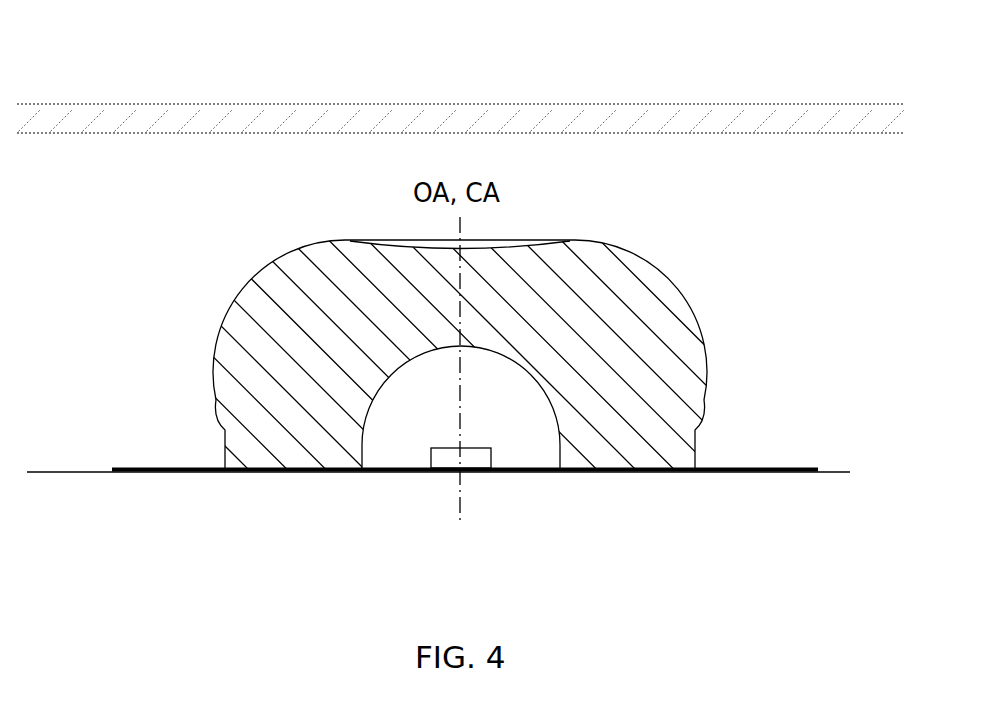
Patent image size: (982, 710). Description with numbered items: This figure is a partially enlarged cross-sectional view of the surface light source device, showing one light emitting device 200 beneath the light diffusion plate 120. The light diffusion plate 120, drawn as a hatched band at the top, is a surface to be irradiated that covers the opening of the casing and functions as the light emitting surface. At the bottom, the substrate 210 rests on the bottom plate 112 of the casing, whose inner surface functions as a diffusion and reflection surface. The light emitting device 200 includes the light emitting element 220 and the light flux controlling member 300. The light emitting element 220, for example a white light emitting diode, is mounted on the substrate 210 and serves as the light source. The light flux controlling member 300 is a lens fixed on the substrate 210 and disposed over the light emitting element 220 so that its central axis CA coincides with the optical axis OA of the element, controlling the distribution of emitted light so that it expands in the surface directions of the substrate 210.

The light diffusion plate 120 is at (120, 128).
The bottom plate 112 is at (100, 471).
The substrate 210 is at (170, 468).
The light emitting device 200 is at (463, 315).
The light flux controlling member 300 is at (320, 247).
The light emitting element 220 is at (447, 473).